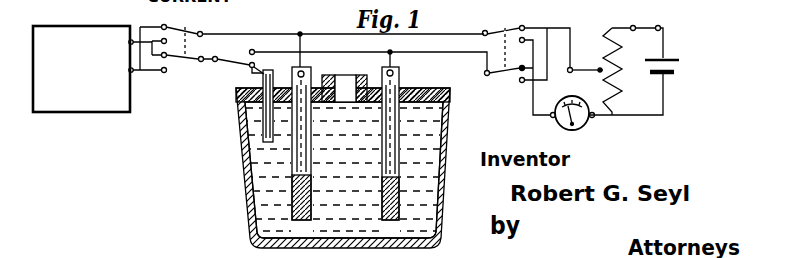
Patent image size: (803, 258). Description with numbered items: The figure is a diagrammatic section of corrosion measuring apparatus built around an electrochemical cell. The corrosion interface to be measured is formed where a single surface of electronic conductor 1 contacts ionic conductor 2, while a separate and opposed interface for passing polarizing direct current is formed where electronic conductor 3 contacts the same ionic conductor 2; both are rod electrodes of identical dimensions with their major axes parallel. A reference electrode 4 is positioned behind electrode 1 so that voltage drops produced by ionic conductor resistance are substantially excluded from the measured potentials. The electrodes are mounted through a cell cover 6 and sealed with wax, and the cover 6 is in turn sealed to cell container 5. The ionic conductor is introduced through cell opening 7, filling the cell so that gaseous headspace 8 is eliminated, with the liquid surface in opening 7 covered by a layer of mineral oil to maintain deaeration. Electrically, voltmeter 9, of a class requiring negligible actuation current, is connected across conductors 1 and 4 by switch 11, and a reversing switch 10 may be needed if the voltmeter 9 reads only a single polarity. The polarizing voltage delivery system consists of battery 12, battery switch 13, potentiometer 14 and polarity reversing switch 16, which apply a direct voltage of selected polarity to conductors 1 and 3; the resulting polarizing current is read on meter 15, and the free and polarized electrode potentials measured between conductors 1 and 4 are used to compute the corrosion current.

The electronic conductor 1 is at (298, 172).
The ionic conductor 2 is at (268, 208).
The electronic conductor 3 is at (392, 137).
The reference electrode 4 is at (265, 130).
The cell container 5 is at (244, 105).
The cell cover 6 is at (430, 89).
The cell opening 7 is at (337, 88).
The gaseous headspace 8 is at (447, 103).
The voltmeter 9 is at (101, 112).
The reversing switch 10 is at (178, 54).
The switch 11 is at (230, 63).
The battery 12 is at (677, 66).
The battery switch 13 is at (645, 24).
The potentiometer 14 is at (582, 68).
The meter 15 is at (592, 116).
The polarity reversing switch 16 is at (506, 62).